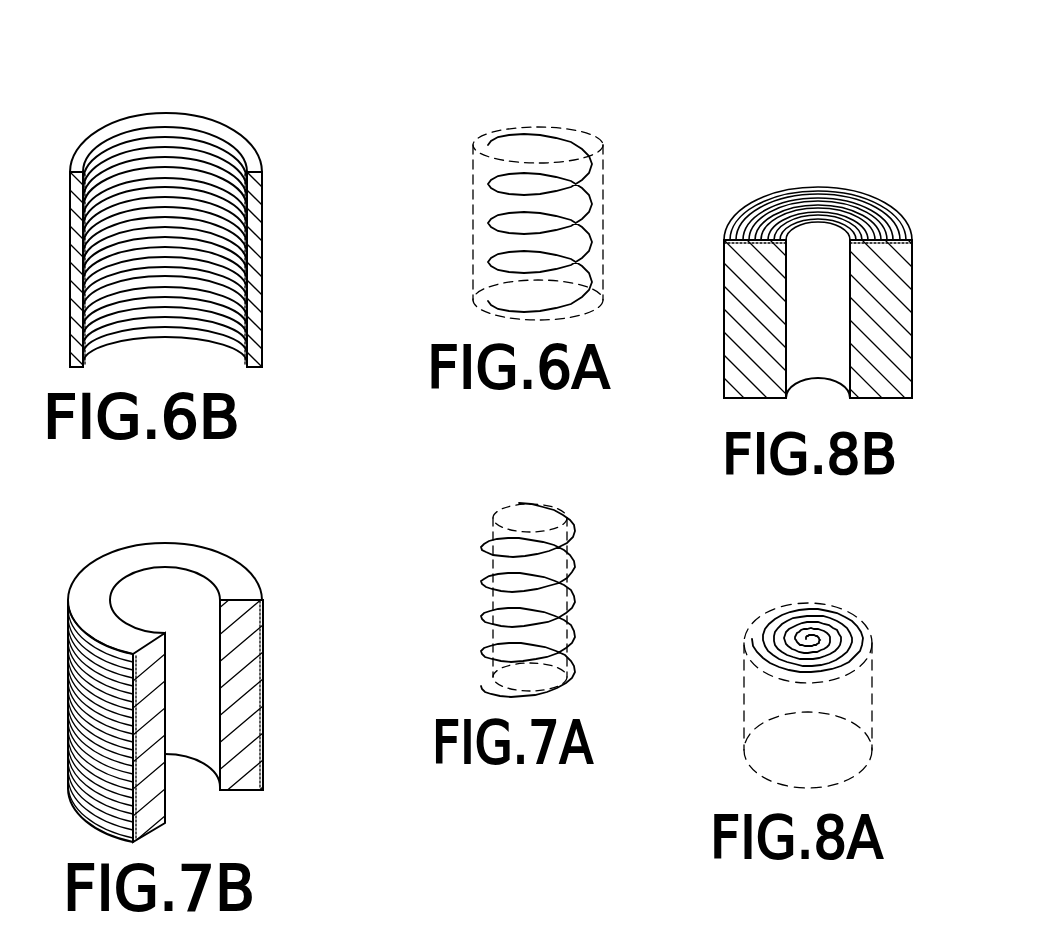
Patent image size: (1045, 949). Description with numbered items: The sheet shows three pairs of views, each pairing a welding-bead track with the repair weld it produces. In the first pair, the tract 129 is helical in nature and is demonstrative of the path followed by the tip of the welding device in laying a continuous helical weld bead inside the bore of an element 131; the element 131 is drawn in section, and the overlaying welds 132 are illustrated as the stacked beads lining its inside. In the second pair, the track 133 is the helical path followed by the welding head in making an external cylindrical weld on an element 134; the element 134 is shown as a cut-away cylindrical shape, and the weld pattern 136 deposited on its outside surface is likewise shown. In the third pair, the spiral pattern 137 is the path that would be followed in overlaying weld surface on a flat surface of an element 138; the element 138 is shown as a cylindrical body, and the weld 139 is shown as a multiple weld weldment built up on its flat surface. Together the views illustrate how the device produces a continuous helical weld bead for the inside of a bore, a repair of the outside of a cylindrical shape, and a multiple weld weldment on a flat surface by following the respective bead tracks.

In FIG. 6A, the tract 129 is at (566, 136).
In FIG. 6B, the element 131 is at (207, 126).
In FIG. 6A, the element 131 is at (605, 168).
In FIG. 6B, the overlaying welds 132 is at (106, 168).
In FIG. 7A, the track 133 is at (485, 532).
In FIG. 7B, the element 134 is at (253, 637).
In FIG. 7A, the element 134 is at (557, 518).
In FIG. 7B, the weld pattern 136 is at (263, 678).
In FIG. 8A, the spiral pattern 137 is at (818, 612).
In FIG. 8B, the element 138 is at (732, 322).
In FIG. 8A, the element 138 is at (743, 697).
In FIG. 8B, the weld 139 is at (832, 197).